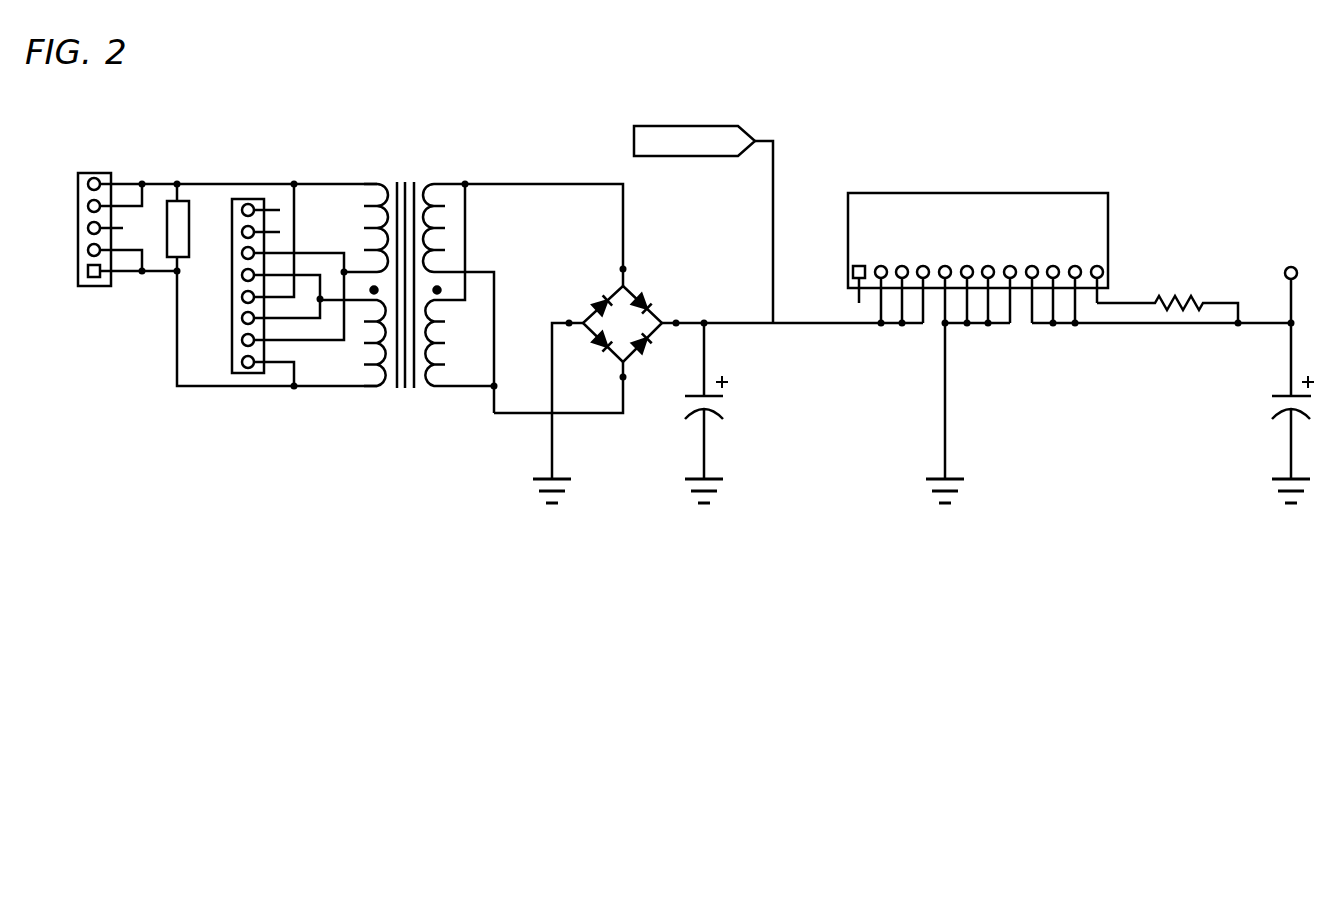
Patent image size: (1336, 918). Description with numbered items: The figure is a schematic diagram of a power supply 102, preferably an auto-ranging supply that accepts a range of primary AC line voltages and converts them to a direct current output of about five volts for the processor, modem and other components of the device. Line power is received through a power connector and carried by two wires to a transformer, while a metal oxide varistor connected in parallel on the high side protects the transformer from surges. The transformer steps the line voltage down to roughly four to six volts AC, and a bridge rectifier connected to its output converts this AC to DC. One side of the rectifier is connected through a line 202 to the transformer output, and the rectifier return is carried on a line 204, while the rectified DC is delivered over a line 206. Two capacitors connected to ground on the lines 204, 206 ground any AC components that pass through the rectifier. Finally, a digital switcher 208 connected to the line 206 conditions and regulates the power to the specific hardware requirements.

The power supply 102 is at (992, 141).
The rectifier input wire 202 is at (553, 184).
The line 204 is at (509, 415).
The line 206 is at (803, 325).
The switcher 208 is at (1054, 192).